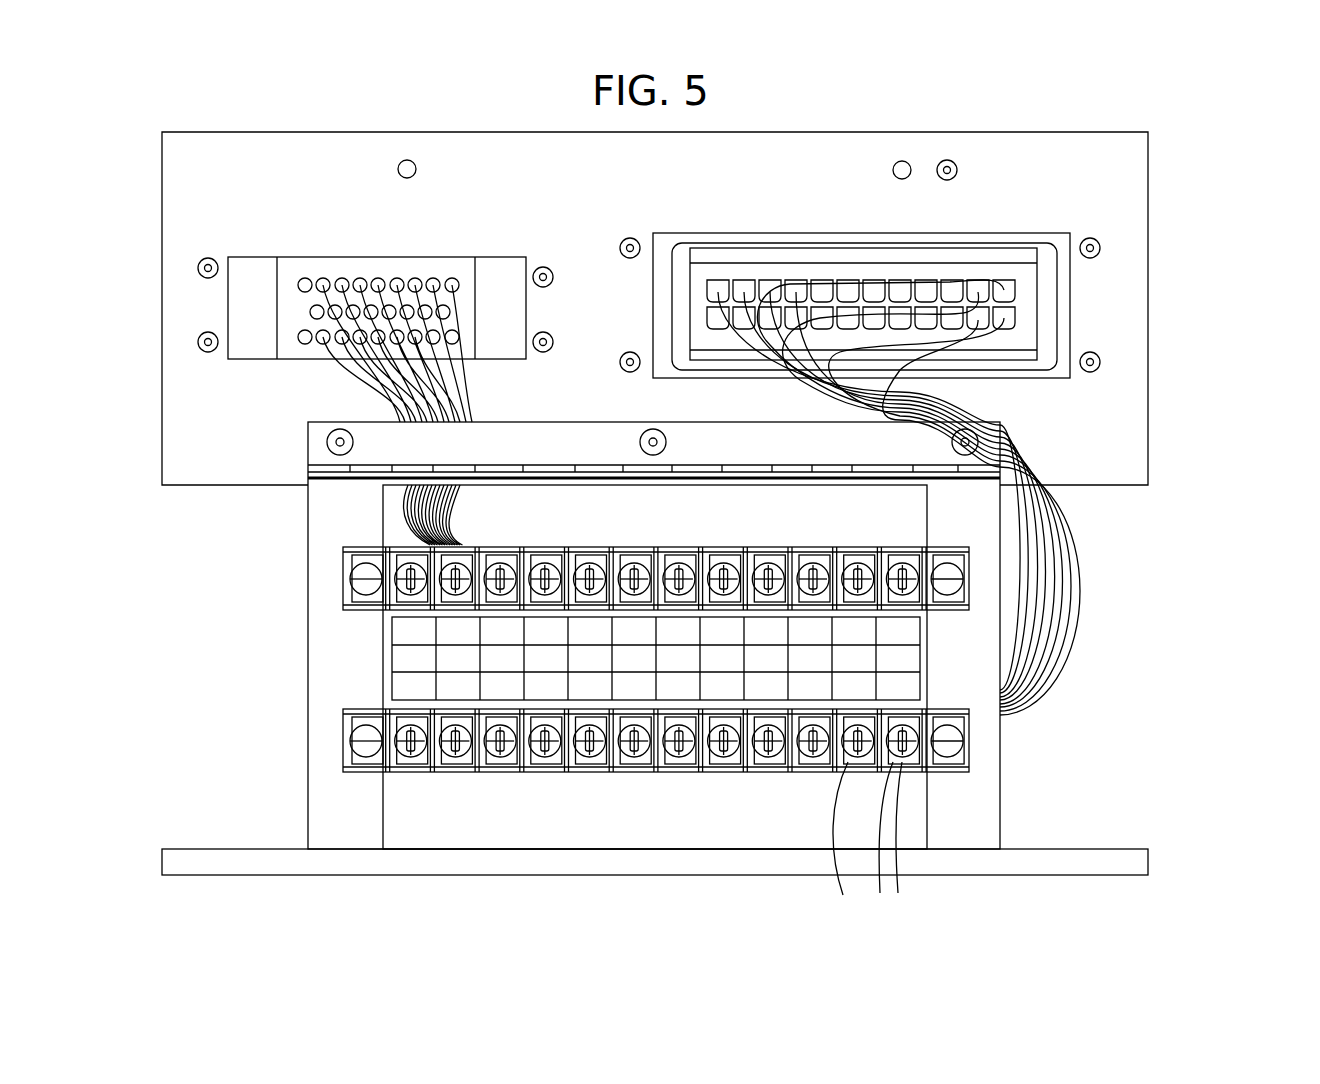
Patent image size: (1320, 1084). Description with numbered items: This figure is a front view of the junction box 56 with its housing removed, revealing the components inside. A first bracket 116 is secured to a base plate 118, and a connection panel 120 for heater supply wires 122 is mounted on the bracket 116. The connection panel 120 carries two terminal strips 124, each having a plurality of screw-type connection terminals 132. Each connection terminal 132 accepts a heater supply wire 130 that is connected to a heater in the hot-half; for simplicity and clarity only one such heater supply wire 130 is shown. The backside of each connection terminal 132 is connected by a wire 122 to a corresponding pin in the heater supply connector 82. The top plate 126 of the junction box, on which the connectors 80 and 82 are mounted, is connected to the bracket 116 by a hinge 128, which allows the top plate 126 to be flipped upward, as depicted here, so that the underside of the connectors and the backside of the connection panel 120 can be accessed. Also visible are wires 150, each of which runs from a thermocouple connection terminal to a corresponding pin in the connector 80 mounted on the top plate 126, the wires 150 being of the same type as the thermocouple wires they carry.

The junction box 56 is at (728, 319).
The connector 80 is at (393, 265).
The heater supply connector 82 is at (992, 253).
The first bracket 116 is at (745, 635).
The base plate 118 is at (1110, 862).
The connection panel 120 is at (747, 790).
The wire 122 is at (1000, 380).
The terminal strips 124 is at (345, 745).
The top plate 126 is at (1125, 372).
The hinge 128 is at (852, 468).
The heater supply wire 130 is at (900, 884).
The screw-type connection terminals 132 is at (859, 846).
The wire 150 is at (447, 512).